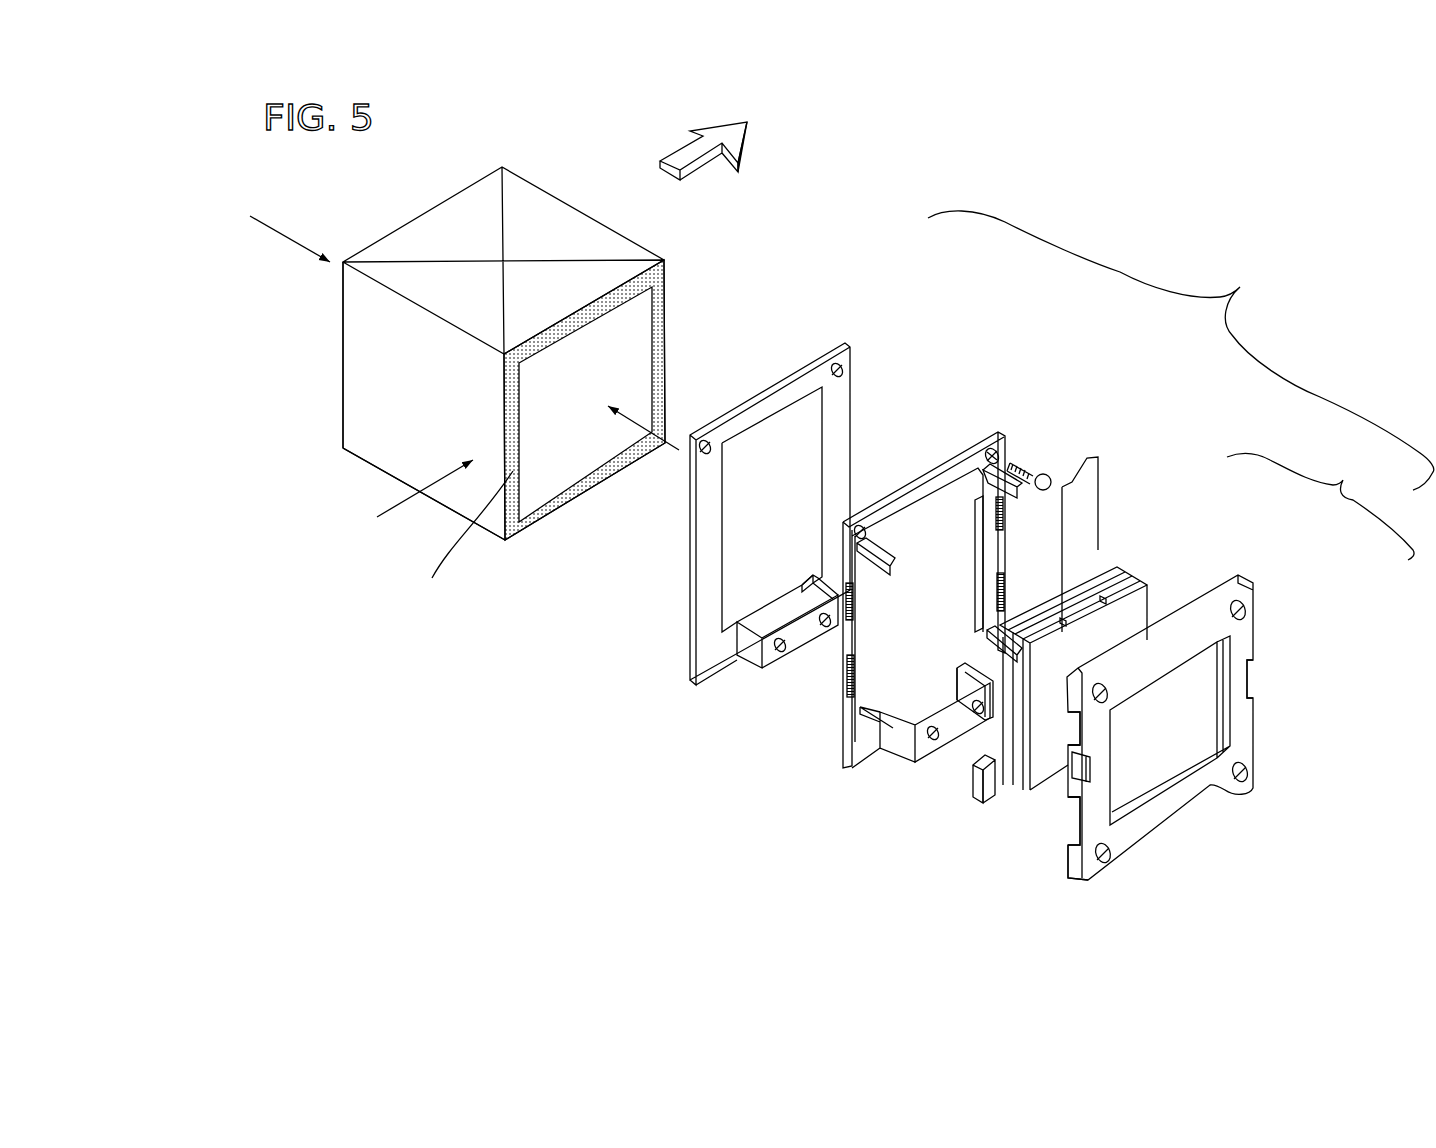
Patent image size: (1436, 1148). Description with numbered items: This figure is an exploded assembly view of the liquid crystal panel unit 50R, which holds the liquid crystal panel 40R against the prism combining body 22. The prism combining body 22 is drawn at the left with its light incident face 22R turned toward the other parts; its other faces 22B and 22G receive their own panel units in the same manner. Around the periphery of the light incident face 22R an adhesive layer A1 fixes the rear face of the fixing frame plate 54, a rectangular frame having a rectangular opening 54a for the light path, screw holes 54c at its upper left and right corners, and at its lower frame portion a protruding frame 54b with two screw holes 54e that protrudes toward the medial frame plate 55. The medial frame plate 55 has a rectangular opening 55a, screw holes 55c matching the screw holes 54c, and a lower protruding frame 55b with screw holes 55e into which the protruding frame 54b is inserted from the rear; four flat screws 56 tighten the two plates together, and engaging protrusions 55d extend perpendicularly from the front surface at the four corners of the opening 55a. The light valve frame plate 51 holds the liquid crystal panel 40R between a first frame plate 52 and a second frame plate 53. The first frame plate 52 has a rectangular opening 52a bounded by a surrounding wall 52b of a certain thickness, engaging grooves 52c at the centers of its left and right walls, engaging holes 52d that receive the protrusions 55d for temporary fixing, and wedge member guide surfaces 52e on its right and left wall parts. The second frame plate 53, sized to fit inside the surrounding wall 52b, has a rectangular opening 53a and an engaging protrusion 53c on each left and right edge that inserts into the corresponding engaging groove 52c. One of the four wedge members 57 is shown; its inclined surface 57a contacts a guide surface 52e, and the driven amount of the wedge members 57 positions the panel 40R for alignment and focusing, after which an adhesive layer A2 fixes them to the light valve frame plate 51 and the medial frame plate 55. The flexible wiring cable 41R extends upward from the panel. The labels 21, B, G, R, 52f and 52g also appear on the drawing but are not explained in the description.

The prism segment 21 is at (449, 248).
The prism combining body 22 is at (482, 377).
The light incident face 22R is at (638, 338).
The face of the prism combining body 22B is at (402, 365).
The face of the prism combining body 22G is at (366, 394).
The blue light B is at (281, 224).
The green light G is at (411, 501).
The red light R is at (649, 422).
The adhesive layer A1 is at (463, 540).
The adhesive layer A2 is at (812, 580).
The fixing frame plate 54 is at (772, 489).
The rectangular opening 54a is at (722, 532).
The protruding frame 54b is at (738, 612).
The screw holes 54c is at (846, 373).
The screw holes 54e is at (780, 652).
The medial frame plate 55 is at (921, 568).
The rectangular opening 55a is at (862, 696).
The protruding frame 55b is at (935, 700).
The screw holes 55c is at (855, 543).
The engaging protrusions 55d is at (988, 482).
The screw holes 55e is at (1018, 630).
The flat screws 56 is at (1040, 468).
The flexible wiring cable 41R is at (1090, 526).
The second frame plate 53 is at (1106, 664).
The liquid crystal panel 40R is at (1152, 587).
The rectangular opening 53a is at (990, 725).
The engaging protrusion 53c is at (985, 740).
The wedge member 57 is at (983, 790).
The inclined surface 57a is at (995, 790).
The first frame plate 52 is at (1196, 761).
The rectangular opening 52a is at (1200, 720).
The surrounding wall 52b is at (1078, 870).
The engaging groove 52c is at (1248, 678).
The engaging holes 52d is at (1250, 612).
The wedge member guide surfaces 52e is at (1118, 837).
The tab 52f is at (1068, 790).
The tab 52g is at (1073, 805).
The liquid crystal panel unit 50R is at (1181, 350).
The light valve frame plate 51 is at (1320, 507).